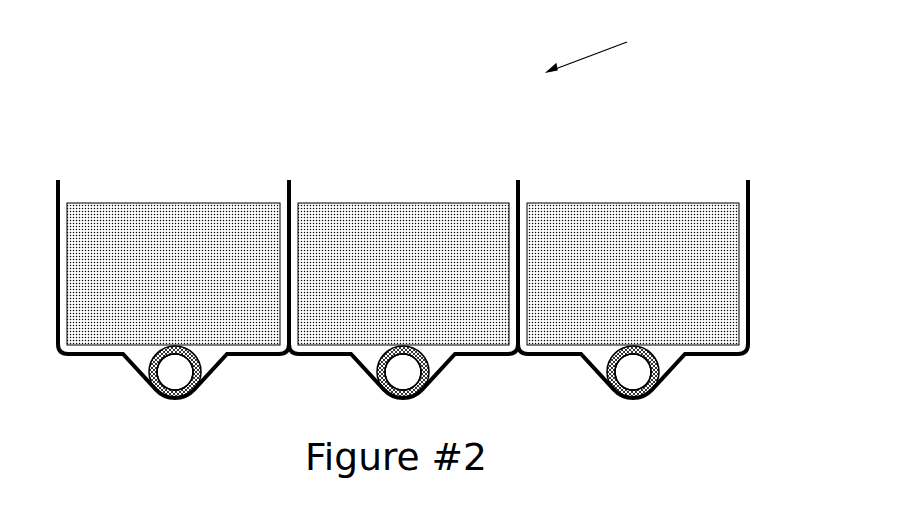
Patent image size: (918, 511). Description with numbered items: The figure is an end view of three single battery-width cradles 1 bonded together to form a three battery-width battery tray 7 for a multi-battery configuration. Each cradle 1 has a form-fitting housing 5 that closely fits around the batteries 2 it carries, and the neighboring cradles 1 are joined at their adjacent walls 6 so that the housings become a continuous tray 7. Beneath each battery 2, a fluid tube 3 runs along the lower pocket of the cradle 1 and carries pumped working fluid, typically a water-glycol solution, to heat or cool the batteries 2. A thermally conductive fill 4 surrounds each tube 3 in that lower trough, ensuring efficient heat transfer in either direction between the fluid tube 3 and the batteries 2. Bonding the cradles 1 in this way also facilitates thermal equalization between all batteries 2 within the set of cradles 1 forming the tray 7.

The cradle 1 is at (153, 178).
The battery 2 is at (182, 202).
The fluid tube 3 is at (175, 372).
The thermally conductive fill 4 is at (150, 373).
The form-fitting housing 5 is at (755, 173).
The adjacent wall 6 is at (297, 172).
The battery tray 7 is at (592, 48).